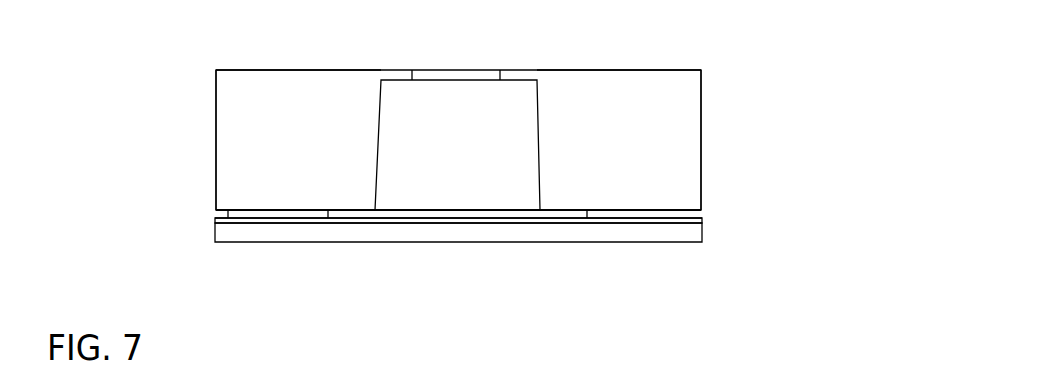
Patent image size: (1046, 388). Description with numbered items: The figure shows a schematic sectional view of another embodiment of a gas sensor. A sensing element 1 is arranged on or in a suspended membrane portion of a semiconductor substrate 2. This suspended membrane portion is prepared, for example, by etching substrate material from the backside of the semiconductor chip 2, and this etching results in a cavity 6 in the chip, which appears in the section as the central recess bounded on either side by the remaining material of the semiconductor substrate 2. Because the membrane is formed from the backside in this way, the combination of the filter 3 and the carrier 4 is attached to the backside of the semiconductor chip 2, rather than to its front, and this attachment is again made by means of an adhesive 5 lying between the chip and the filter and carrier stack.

The sensing element 1 is at (455, 70).
The semiconductor substrate 2 is at (417, 140).
The filter 3 is at (567, 221).
The carrier 4 is at (437, 233).
The adhesive 5 is at (672, 220).
The cavity 6 is at (457, 145).